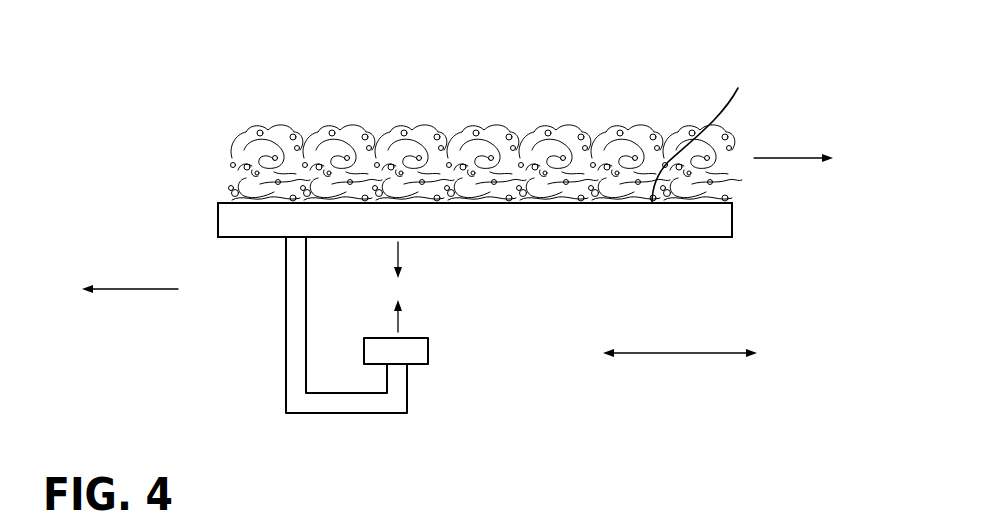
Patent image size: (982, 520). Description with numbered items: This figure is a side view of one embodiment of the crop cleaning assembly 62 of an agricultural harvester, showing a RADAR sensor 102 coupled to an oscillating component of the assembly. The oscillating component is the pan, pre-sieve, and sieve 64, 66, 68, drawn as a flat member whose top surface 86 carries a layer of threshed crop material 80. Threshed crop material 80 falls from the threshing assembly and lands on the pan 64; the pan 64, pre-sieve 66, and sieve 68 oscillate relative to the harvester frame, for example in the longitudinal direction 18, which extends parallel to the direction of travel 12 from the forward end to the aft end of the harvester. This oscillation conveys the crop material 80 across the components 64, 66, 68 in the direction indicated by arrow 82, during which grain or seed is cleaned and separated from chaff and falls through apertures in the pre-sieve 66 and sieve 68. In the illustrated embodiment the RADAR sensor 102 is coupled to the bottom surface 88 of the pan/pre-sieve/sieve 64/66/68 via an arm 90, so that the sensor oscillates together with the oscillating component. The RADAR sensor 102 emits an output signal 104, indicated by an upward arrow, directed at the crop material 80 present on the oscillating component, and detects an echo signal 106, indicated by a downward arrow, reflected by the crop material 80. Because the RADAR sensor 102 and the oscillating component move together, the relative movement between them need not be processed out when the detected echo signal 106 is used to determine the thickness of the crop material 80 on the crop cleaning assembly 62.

The direction of travel 12 is at (140, 289).
The longitudinal direction 18 is at (677, 353).
The crop cleaning assembly 62 is at (181, 108).
The pan 64 is at (208, 225).
The pre-sieve 66 is at (475, 220).
The sieve 68 is at (475, 220).
The crop material 80 is at (373, 110).
The arrow indicating conveyance of crop material 82 is at (792, 158).
The top surface 86 is at (704, 132).
The bottom surface 88 is at (610, 237).
The arm 90 is at (286, 312).
The RADAR sensor 102 is at (428, 352).
The output signal 104 is at (398, 328).
The echo signal 106 is at (398, 255).